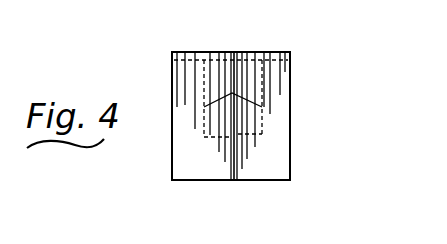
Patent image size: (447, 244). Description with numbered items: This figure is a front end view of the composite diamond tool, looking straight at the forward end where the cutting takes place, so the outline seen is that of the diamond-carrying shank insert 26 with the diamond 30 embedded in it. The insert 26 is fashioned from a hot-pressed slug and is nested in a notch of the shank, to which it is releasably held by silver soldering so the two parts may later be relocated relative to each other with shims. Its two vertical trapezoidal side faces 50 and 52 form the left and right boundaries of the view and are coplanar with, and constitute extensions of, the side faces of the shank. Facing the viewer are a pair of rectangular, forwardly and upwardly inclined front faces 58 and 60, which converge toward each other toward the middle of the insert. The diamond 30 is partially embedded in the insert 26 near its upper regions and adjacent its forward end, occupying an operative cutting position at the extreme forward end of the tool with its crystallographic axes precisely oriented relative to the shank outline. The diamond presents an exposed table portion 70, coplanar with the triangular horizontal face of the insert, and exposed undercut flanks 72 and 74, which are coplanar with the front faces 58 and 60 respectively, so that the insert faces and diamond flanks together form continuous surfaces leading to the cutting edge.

The diamond-carrying shank insert 26 is at (273, 80).
The diamond 30 is at (218, 46).
The trapezoidal side face 50 is at (172, 147).
The trapezoidal side face 52 is at (291, 122).
The front face 58 is at (204, 171).
The front face 60 is at (262, 171).
The table portion 70 is at (229, 56).
The undercut flank 72 is at (212, 75).
The undercut flank 74 is at (243, 68).